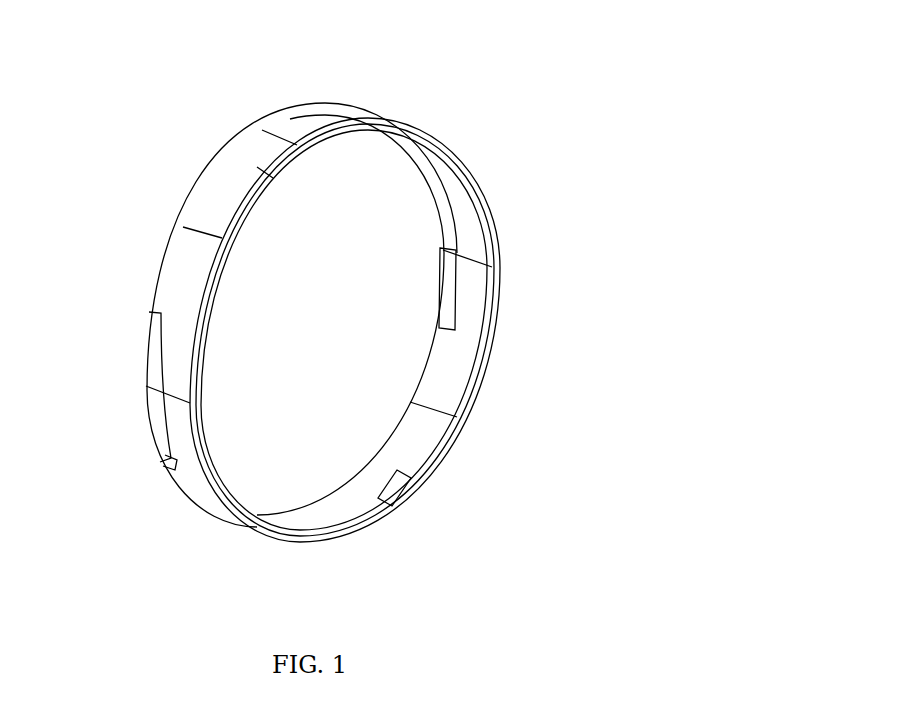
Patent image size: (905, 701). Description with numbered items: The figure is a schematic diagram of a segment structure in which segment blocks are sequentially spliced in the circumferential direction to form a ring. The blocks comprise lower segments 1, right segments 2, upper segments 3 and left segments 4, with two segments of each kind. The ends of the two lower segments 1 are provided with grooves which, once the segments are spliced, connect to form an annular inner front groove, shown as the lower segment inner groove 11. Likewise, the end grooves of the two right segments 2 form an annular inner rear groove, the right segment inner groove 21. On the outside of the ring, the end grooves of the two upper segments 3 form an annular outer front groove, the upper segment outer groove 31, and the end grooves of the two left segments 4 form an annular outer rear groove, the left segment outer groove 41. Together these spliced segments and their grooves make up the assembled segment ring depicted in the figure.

The lower segment 1 is at (398, 458).
The lower segment inner groove 11 is at (350, 527).
The right segment 2 is at (462, 187).
The right segment inner groove 21 is at (450, 275).
The upper segment 3 is at (235, 160).
The upper segment outer groove 31 is at (262, 125).
The left segment 4 is at (167, 302).
The left segment outer groove 41 is at (150, 413).